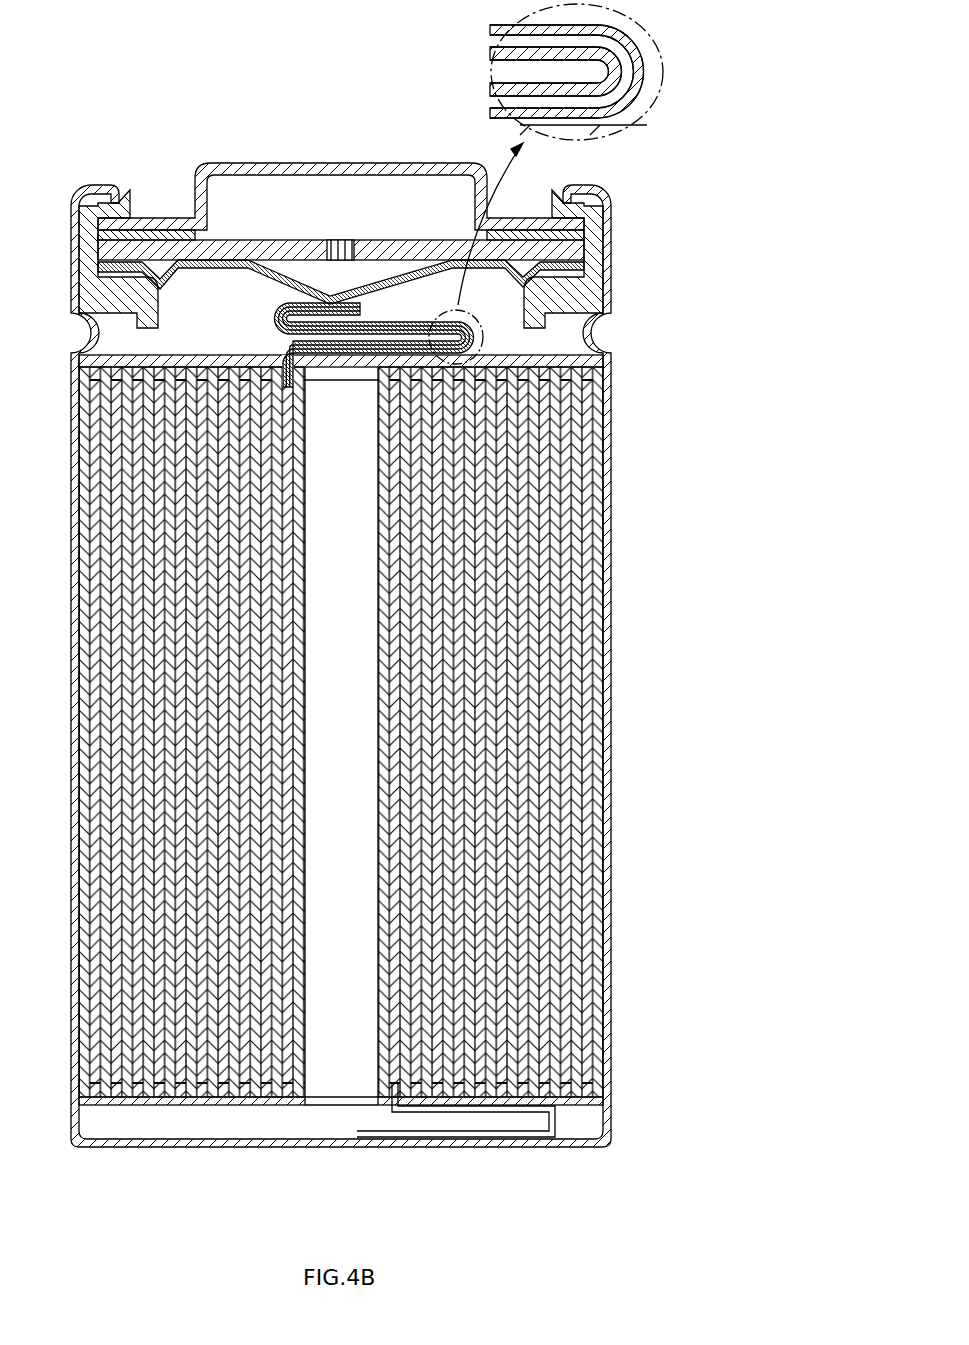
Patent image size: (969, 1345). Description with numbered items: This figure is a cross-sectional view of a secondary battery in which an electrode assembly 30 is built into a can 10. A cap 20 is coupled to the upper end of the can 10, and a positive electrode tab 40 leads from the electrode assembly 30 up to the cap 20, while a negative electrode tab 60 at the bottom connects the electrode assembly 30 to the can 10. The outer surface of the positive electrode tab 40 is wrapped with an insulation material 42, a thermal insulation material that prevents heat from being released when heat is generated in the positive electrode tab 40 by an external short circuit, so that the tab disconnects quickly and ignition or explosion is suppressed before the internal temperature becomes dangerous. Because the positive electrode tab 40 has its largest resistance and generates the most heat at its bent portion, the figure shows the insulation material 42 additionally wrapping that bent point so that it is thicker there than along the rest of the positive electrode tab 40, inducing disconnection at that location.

The can 10 is at (611, 467).
The cap 20 is at (158, 250).
The electrode assembly 30 is at (560, 425).
The positive electrode tab 40 is at (293, 304).
The insulation material 42 is at (404, 327).
The negative electrode tab 60 is at (553, 1120).